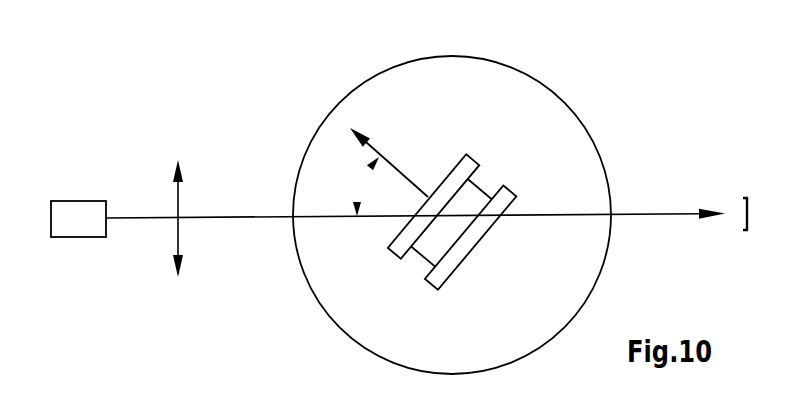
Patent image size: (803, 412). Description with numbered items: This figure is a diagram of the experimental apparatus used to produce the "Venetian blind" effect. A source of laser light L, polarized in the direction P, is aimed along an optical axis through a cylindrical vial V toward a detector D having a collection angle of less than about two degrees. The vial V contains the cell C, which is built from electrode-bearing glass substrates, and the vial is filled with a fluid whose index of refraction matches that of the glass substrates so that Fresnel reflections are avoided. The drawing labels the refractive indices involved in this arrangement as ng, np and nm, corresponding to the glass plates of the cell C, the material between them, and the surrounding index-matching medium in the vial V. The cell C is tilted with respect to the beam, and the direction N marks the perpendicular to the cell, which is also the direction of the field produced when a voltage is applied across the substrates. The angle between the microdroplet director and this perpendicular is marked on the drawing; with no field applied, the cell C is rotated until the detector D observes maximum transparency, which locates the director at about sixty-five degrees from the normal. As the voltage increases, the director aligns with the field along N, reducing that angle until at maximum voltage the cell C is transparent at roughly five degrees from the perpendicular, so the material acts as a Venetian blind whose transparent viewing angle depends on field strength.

The source of laser light L is at (84, 190).
The polarization direction P is at (178, 207).
The cylindrical vial V is at (350, 350).
The cell C is at (460, 292).
The field direction N is at (384, 152).
The refractive index of glass plate ng is at (444, 156).
The refractive index of gap medium np is at (485, 186).
The refractive index of surrounding medium nm is at (396, 286).
The detector D is at (746, 197).